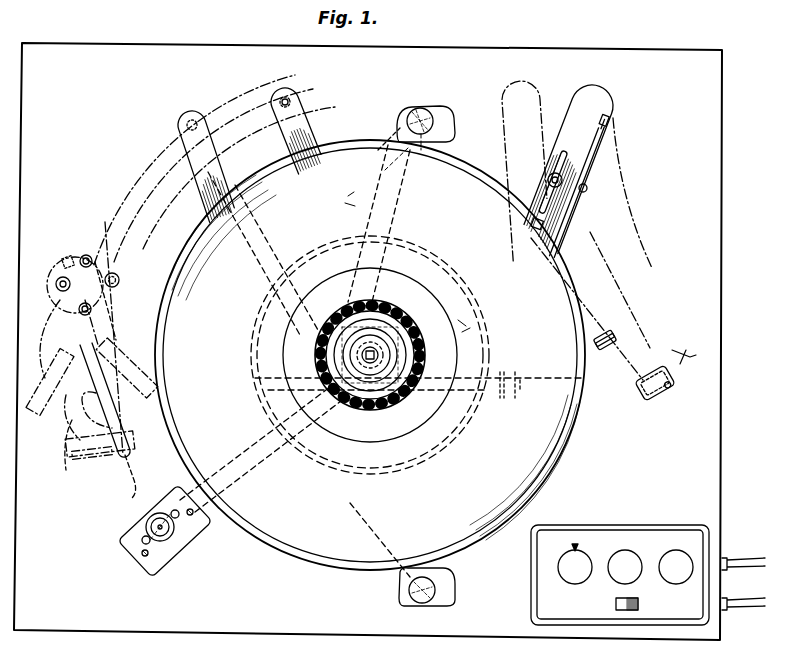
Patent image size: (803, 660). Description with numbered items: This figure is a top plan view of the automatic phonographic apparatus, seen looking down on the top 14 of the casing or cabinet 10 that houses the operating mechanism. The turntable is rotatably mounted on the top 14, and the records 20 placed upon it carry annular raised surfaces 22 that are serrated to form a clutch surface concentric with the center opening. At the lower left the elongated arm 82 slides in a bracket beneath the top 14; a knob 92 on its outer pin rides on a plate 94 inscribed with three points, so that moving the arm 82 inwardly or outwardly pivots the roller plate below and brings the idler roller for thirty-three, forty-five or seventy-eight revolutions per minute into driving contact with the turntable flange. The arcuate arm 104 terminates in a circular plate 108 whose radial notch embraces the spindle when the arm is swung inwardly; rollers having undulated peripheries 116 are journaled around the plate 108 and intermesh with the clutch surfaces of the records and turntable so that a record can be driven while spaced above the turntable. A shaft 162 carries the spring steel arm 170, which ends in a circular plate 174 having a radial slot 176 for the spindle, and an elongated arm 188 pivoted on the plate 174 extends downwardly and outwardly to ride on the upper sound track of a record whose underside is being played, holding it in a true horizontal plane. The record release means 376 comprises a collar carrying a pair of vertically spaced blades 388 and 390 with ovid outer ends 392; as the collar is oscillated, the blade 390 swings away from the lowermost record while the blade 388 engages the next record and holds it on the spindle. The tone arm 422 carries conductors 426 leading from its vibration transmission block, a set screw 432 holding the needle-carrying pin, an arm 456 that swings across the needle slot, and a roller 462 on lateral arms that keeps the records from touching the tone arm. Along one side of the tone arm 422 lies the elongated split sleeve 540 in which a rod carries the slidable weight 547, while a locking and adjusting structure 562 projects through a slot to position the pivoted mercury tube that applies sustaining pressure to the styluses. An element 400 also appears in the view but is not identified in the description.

The casing 10 is at (722, 431).
The top of the casing 14 is at (348, 620).
The records 20 is at (520, 475).
The annular raised surfaces 22 is at (372, 410).
The elongated arm 82 is at (253, 452).
The knob 92 is at (165, 530).
The plate 94 is at (198, 527).
The arcuate arm 104 is at (120, 200).
The circular plate 108 is at (62, 428).
The undulated peripheries 116 is at (92, 462).
The shaft 162 is at (288, 100).
The spring steel arm 170 is at (231, 130).
The circular plate 174 is at (121, 281).
The radial slot 176 is at (110, 312).
The elongated arm 188 is at (128, 493).
The record release means 376 is at (444, 107).
The blade 388 is at (403, 118).
The blade 390 is at (445, 126).
The ovid outer ends 392 is at (440, 137).
The control linkage 400 is at (167, 653).
The tone arm 422 is at (506, 323).
The conductors 426 is at (744, 557).
The set screw 432 is at (698, 355).
The arm 456 is at (655, 392).
The roller 462 is at (599, 352).
The elongated split sleeve 540 is at (598, 172).
The weight 547 is at (618, 128).
The locking and adjusting structure 562 is at (548, 179).